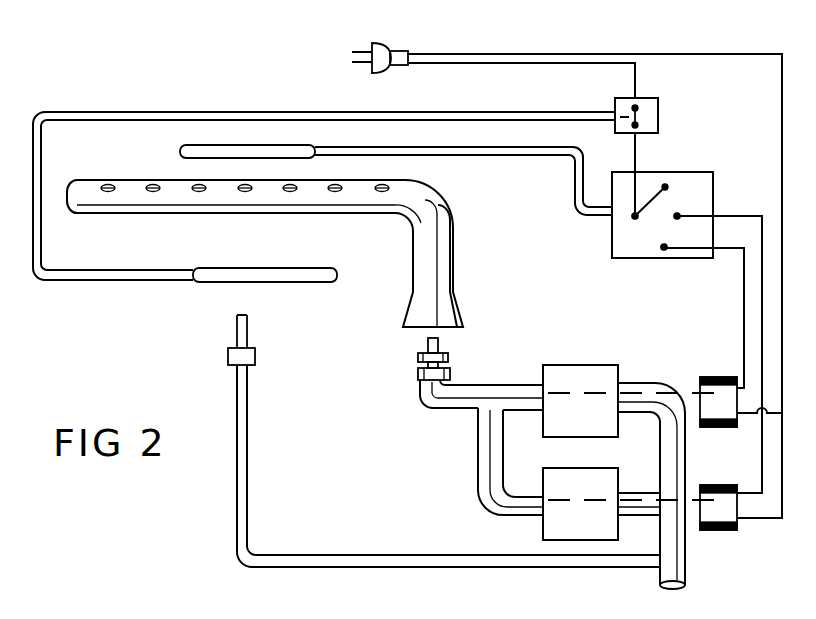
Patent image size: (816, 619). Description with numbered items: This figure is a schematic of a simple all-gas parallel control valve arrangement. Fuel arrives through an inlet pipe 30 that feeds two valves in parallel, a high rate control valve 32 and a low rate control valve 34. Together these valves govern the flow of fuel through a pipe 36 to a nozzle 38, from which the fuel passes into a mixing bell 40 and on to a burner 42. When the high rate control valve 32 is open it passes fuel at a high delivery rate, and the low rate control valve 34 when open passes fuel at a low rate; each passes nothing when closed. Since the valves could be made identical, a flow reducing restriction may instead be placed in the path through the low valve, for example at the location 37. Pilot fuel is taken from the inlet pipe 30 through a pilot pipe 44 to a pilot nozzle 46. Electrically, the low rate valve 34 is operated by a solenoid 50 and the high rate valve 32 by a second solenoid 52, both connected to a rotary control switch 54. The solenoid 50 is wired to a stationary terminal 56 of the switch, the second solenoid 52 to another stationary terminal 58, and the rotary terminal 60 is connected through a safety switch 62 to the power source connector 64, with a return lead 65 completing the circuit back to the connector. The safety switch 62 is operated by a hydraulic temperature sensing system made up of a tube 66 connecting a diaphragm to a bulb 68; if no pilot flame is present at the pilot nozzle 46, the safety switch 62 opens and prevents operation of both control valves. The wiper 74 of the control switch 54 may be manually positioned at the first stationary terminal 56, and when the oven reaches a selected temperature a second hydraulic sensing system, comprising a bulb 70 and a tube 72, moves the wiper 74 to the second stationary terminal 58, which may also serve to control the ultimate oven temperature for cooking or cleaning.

The inlet pipe 30 is at (705, 567).
The high rate control valve 32 is at (590, 483).
The low rate control valve 34 is at (587, 375).
The pipe 36 is at (478, 392).
The restriction location 37 is at (528, 392).
The nozzle 38 is at (425, 342).
The mixing bell 40 is at (445, 270).
The burner 42 is at (130, 181).
The pilot pipe 44 is at (343, 557).
The pilot nozzle 46 is at (243, 333).
The solenoid 50 is at (727, 378).
The second solenoid 52 is at (722, 535).
The rotary control switch 54 is at (713, 190).
The stationary terminal 56 is at (666, 252).
The stationary terminal 58 is at (690, 220).
The rotary terminal 60 is at (613, 225).
The safety switch 62 is at (660, 118).
The power source connector 64 is at (400, 50).
The lead 65 is at (781, 86).
The tube 66 is at (297, 110).
The bulb 68 is at (300, 266).
The bulb 70 is at (185, 146).
The tube 72 is at (533, 152).
The wiper 74 is at (654, 196).